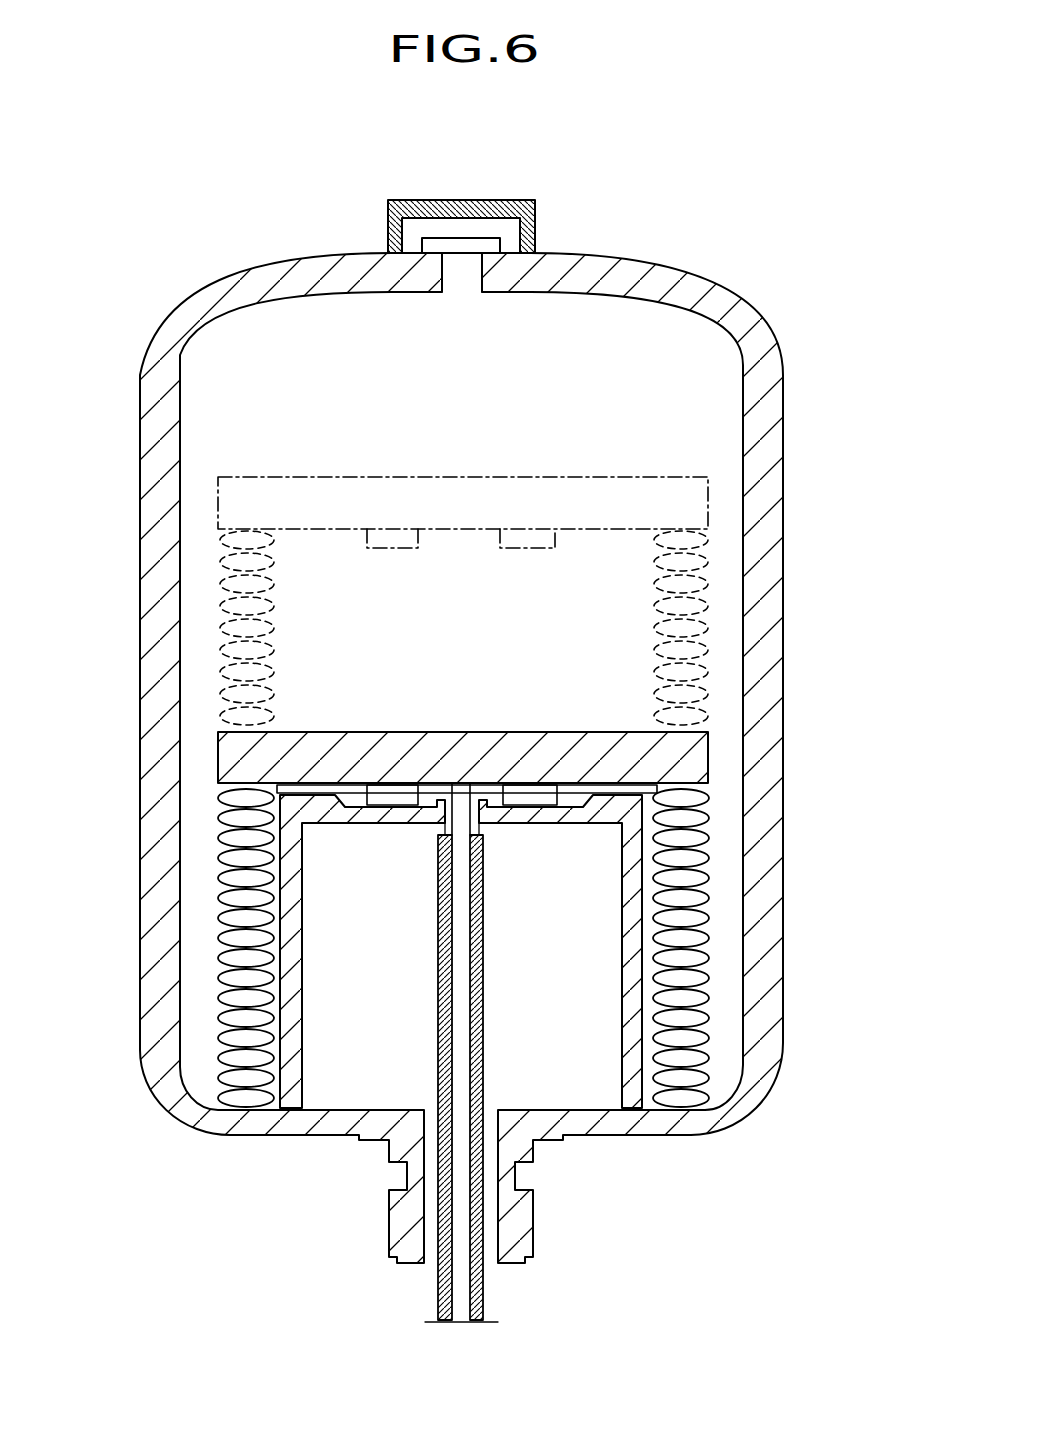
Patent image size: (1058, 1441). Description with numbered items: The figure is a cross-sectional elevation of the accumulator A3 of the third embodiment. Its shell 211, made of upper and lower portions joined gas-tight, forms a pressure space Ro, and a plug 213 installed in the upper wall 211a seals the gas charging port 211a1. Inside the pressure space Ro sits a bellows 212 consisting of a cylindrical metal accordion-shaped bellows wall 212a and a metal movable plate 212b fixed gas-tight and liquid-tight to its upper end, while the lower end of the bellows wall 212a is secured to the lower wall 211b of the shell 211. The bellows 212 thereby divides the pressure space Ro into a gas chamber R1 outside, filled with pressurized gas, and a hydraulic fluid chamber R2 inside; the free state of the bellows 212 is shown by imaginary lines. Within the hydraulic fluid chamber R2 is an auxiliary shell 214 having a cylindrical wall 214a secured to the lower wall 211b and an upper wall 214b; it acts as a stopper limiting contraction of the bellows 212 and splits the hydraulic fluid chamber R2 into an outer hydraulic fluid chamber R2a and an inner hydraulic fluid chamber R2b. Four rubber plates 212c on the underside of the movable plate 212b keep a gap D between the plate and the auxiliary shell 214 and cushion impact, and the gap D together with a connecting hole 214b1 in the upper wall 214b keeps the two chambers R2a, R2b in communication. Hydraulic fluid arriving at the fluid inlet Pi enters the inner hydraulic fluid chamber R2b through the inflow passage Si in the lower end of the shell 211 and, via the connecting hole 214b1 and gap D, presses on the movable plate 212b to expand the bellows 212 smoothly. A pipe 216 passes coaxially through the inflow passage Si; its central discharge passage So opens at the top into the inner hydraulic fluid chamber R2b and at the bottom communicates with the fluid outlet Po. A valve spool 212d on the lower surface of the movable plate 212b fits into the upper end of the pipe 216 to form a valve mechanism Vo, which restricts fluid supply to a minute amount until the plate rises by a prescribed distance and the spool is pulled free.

The accumulator A3 is at (782, 290).
The shell 211 is at (783, 395).
The upper wall 211a is at (570, 266).
The gas charging port 211a1 is at (462, 270).
The lower wall 211b is at (626, 1128).
The plug 213 is at (456, 236).
The bellows 212 is at (692, 800).
The bellows wall 212a is at (230, 600).
The movable plate 212b is at (708, 756).
The rubber plates 212c is at (382, 790).
The valve spool 212d is at (487, 870).
The auxiliary shell 214 is at (240, 802).
The cylindrical wall 214a is at (636, 1066).
The upper wall 214b is at (575, 822).
The connecting hole 214b1 is at (440, 828).
The pipe 216 is at (485, 1002).
The gas chamber R1 is at (196, 392).
The hydraulic fluid chamber R2 is at (310, 932).
The outer hydraulic fluid chamber R2a is at (270, 1112).
The inner hydraulic fluid chamber R2b is at (340, 1090).
The pressure space Ro is at (722, 592).
The valve mechanism Vo is at (448, 848).
The gap D is at (345, 783).
The inflow passage Si is at (396, 1252).
The fluid inlet Pi is at (430, 1270).
The discharge passage So is at (470, 1252).
The fluid outlet Po is at (465, 1322).